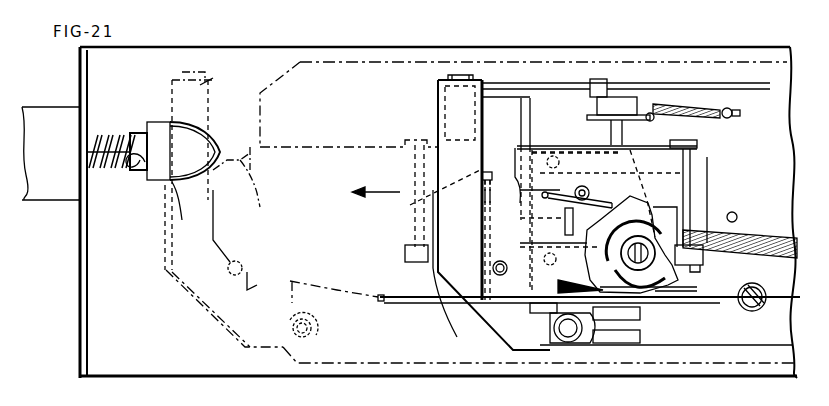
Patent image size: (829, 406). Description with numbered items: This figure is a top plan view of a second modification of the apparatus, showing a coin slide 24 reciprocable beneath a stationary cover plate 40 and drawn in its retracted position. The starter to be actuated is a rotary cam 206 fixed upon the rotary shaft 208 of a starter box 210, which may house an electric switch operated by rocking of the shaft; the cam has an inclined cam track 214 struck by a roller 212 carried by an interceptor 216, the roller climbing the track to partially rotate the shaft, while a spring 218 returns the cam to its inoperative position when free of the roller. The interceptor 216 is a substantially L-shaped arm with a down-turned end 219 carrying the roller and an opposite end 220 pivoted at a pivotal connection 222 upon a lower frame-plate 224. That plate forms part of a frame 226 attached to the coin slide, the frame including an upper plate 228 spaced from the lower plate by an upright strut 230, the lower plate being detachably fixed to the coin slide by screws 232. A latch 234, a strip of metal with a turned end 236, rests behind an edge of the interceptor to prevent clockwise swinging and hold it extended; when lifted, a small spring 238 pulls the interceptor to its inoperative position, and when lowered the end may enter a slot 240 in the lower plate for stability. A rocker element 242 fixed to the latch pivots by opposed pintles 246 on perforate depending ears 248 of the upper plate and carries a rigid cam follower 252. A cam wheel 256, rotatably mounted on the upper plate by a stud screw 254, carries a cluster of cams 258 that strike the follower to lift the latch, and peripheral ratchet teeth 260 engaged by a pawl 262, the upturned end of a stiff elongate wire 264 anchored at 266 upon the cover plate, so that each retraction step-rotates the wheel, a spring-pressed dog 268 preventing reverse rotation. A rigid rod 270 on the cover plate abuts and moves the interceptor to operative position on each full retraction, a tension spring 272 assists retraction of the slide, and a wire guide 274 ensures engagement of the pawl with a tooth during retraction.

The coin slide 24 is at (286, 61).
The stationary cover plate 40 is at (770, 88).
The rotary cam 206 is at (173, 195).
The rotary shaft 208 is at (160, 181).
The starter box 210 is at (43, 200).
The roller 212 is at (172, 103).
The inclined cam track 214 is at (172, 208).
The interceptor 216 is at (165, 252).
The spring 218 is at (110, 140).
The down-turned end 219 is at (213, 81).
The opposite end 220 is at (571, 343).
The pivotal connection 222 is at (565, 334).
The lower frame-plate 224 is at (166, 273).
The frame 226 is at (546, 143).
The upper plate 228 is at (690, 170).
The upright strut 230 is at (556, 221).
The screws 232 is at (566, 140).
The latch 234 is at (496, 130).
The turned end 236 is at (228, 207).
The small spring 238 is at (246, 262).
The slot 240 is at (492, 172).
The rocker element 242 is at (622, 132).
The pintles 246 is at (688, 142).
The depending ears 248 is at (700, 146).
The cam follower 252 is at (703, 262).
The stud screw 254 is at (748, 214).
The cam wheel 256 is at (618, 282).
The cams 258 is at (662, 205).
The ratchet teeth 260 is at (645, 248).
The pawl 262 is at (380, 295).
The stiff elongate wire 264 is at (431, 306).
The anchorage 266 is at (753, 311).
The spring-pressed dog 268 is at (600, 188).
The rigid rod 270 is at (492, 80).
The tension spring 272 is at (780, 250).
The wire guide 274 is at (333, 303).